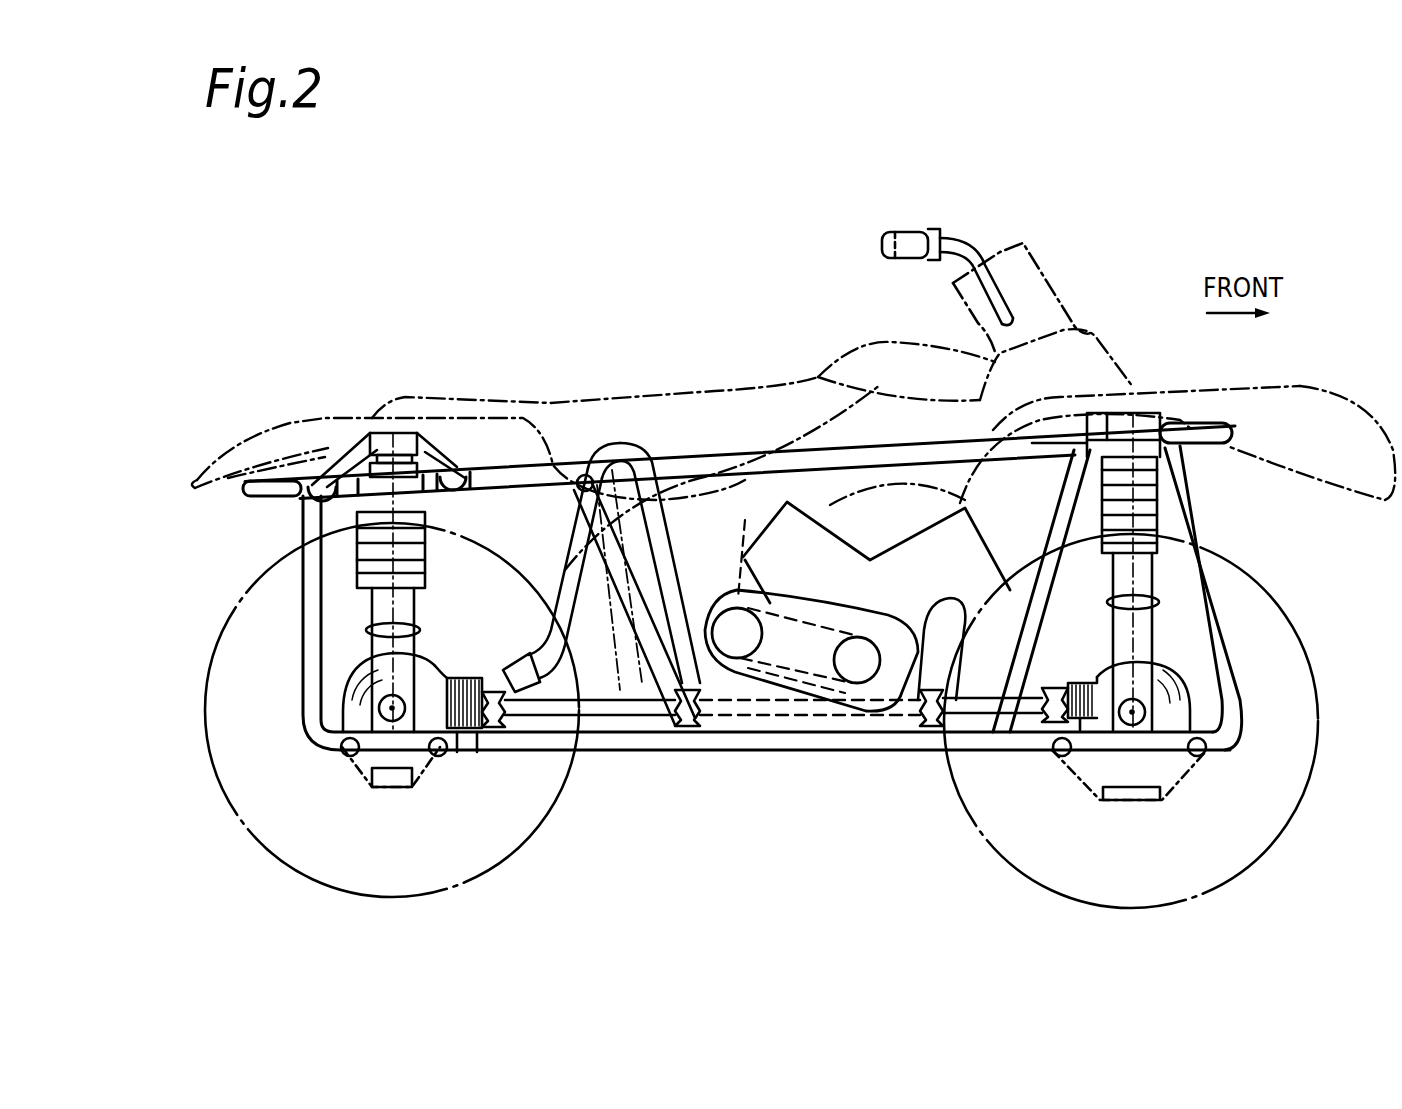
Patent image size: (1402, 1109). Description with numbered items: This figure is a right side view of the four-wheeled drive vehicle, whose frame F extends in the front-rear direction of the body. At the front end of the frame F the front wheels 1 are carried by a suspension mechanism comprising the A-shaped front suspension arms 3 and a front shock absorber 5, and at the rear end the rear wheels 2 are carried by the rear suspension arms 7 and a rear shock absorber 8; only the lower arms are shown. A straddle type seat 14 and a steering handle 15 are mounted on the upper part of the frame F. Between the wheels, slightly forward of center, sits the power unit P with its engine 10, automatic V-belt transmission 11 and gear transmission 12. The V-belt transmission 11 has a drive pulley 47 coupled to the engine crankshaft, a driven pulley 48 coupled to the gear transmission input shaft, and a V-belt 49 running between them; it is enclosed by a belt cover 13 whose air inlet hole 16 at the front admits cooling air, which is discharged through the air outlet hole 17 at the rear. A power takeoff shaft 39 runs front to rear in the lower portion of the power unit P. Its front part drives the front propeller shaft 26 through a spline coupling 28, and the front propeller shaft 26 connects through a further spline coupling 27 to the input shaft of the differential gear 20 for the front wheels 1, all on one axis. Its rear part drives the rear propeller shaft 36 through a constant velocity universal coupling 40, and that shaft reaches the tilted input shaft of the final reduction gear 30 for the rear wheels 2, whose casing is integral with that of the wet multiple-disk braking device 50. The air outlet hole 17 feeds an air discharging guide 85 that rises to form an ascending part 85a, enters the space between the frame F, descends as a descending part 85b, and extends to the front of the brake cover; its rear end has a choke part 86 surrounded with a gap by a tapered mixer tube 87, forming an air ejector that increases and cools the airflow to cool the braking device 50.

The front wheels 1 is at (1300, 640).
The rear wheels 2 is at (242, 590).
The front suspension arms 3 is at (1187, 773).
The front shock absorber 5 is at (1170, 525).
The rear suspension arms 7 is at (350, 772).
The rear shock absorber 8 is at (420, 552).
The engine 10 is at (858, 518).
The automatic V-belt transmission 11 is at (797, 720).
The gear transmission 12 is at (725, 692).
The belt cover 13 is at (805, 605).
The straddle type seat 14 is at (727, 396).
The steering handle 15 is at (975, 255).
The air inlet hole 16 is at (932, 640).
The air outlet hole 17 is at (702, 594).
The differential gear 20 is at (1193, 677).
The front propeller shaft 26 is at (975, 716).
The spline coupling 27 is at (1047, 732).
The spline coupling 28 is at (928, 730).
The final reduction gear 30 is at (330, 694).
The rear propeller shaft 36 is at (607, 717).
The power takeoff shaft 39 is at (838, 713).
The constant velocity universal coupling 40 is at (672, 728).
The drive pulley 47 is at (877, 720).
The driven pulley 48 is at (871, 542).
The V-belt 49 is at (778, 672).
The braking device 50 is at (463, 668).
The air discharging guide 85 is at (627, 474).
The ascending part 85a is at (688, 508).
The descending part 85b is at (562, 560).
The choke part 86 is at (528, 688).
The mixer tube 87 is at (570, 677).
The frame F is at (814, 438).
The power unit P is at (916, 515).